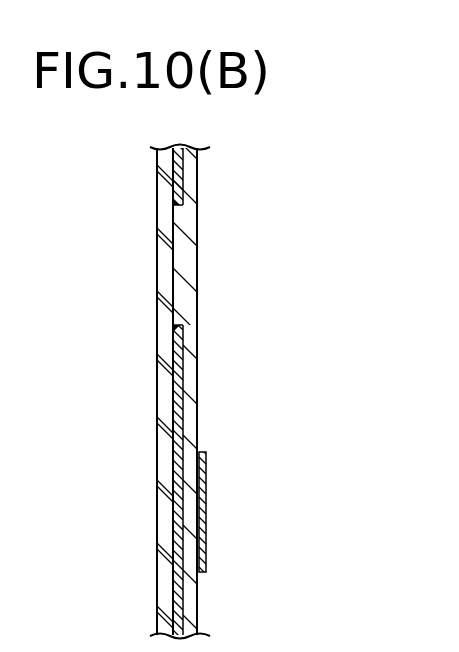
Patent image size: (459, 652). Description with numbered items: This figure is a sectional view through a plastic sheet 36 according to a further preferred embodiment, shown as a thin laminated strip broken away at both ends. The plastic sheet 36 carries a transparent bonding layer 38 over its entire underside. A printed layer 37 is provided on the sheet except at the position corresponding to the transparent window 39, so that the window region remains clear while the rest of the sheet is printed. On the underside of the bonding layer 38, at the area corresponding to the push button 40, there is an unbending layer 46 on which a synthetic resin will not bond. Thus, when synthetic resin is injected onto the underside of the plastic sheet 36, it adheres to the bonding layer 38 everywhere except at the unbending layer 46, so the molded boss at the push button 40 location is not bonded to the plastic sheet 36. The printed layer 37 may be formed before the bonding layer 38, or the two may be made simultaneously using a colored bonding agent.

The plastic sheet 36 is at (157, 415).
The printed layer 37 is at (160, 558).
The bonding layer 38 is at (188, 255).
The transparent window 39 is at (152, 240).
The push button 40 is at (157, 482).
The unbending layer 46 is at (205, 517).